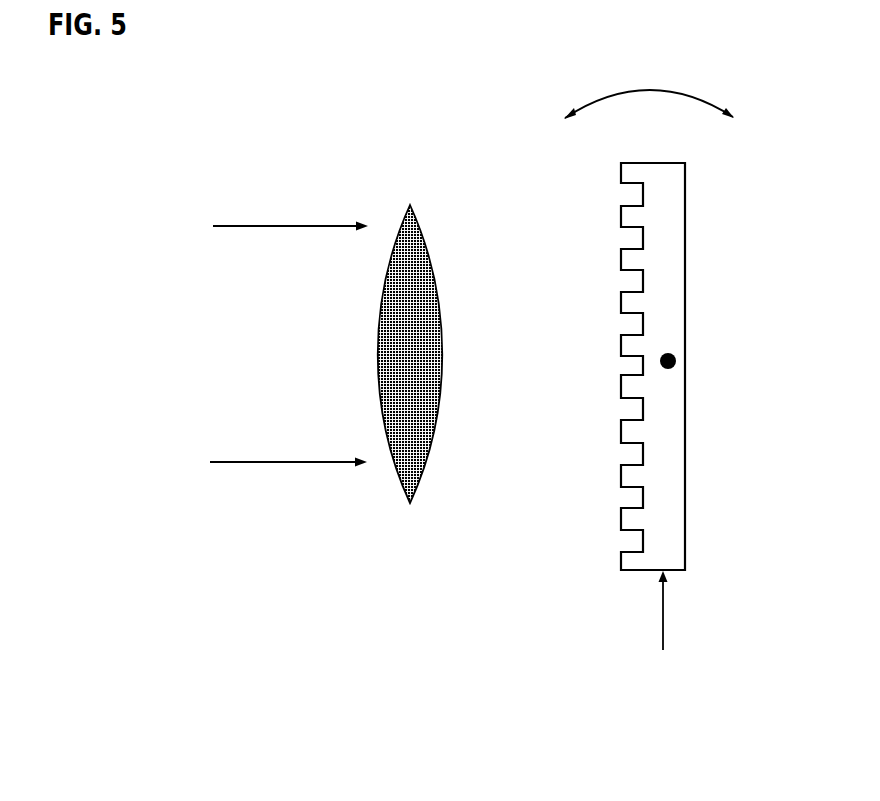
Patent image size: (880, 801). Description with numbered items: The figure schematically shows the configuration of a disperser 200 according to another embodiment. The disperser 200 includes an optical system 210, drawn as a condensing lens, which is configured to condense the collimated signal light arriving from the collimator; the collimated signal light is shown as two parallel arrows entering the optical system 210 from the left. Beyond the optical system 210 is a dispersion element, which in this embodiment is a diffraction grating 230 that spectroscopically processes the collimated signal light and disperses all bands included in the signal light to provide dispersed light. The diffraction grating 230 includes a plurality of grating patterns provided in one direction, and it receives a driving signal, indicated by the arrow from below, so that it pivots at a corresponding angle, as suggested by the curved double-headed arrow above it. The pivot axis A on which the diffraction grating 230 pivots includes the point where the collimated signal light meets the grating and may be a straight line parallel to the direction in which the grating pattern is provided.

The disperser 200 is at (158, 176).
The optical system 210 is at (408, 500).
The diffraction grating 230 is at (672, 487).
The pivot axis A is at (678, 366).